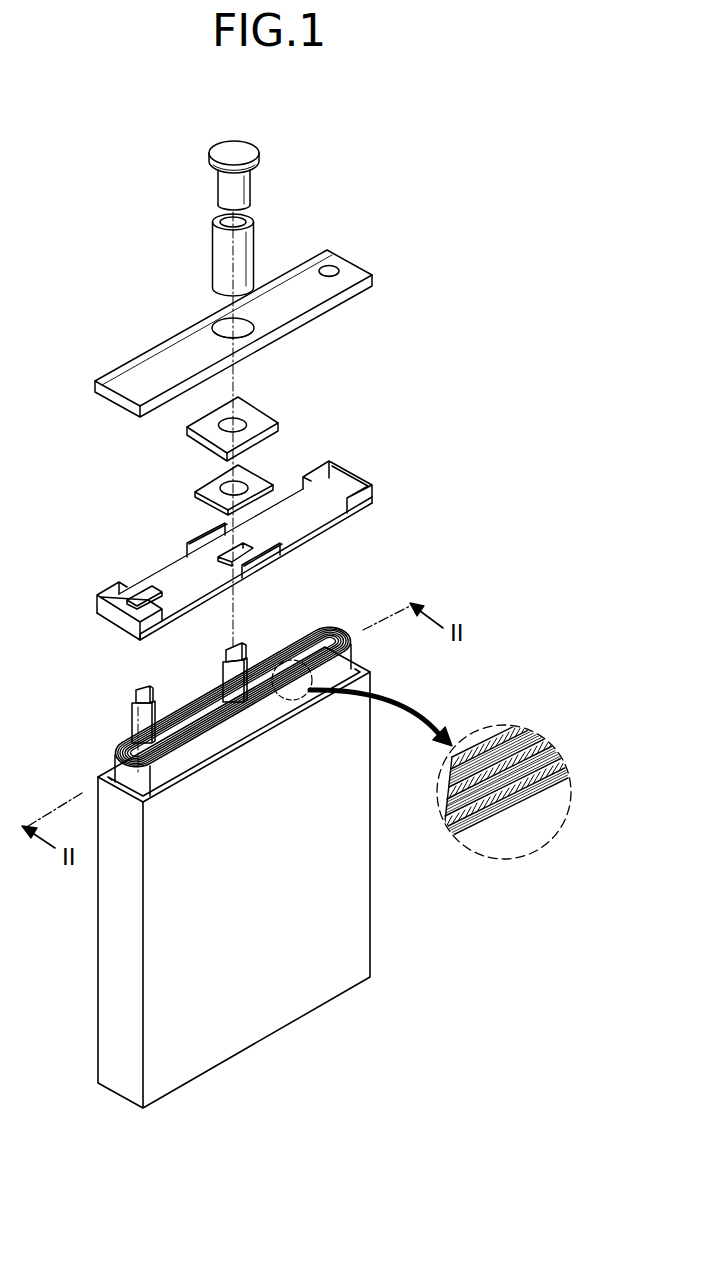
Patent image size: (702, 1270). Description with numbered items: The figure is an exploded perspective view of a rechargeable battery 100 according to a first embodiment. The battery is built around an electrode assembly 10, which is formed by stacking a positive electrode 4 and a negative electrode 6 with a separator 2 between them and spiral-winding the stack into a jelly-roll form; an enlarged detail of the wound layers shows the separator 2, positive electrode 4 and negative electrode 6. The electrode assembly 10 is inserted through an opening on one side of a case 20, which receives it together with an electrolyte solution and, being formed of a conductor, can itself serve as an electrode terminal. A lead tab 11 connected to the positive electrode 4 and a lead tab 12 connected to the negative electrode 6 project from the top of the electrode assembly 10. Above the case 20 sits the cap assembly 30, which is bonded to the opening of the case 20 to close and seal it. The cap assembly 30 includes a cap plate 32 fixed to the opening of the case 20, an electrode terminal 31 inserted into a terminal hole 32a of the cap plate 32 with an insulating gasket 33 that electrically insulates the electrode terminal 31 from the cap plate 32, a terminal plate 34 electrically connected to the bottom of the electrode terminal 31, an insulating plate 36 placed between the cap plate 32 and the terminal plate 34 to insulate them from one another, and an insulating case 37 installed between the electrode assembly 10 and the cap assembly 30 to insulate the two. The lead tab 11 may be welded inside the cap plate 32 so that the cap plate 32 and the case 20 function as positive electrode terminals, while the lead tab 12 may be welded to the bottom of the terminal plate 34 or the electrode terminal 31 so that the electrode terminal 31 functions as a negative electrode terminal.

The rechargeable battery 100 is at (81, 192).
The electrode assembly 10 is at (331, 630).
The lead tab 11 is at (137, 683).
The lead tab 12 is at (238, 652).
The case 20 is at (257, 1020).
The cap assembly 30 is at (370, 386).
The electrode terminal 31 is at (246, 150).
The cap plate 32 is at (125, 377).
The terminal hole 32a is at (220, 326).
The insulating gasket 33 is at (222, 258).
The terminal plate 34 is at (255, 481).
The insulating plate 36 is at (258, 416).
The insulating case 37 is at (335, 497).
The separator 2 is at (443, 827).
The positive electrode 4 is at (550, 740).
The negative electrode 6 is at (563, 770).